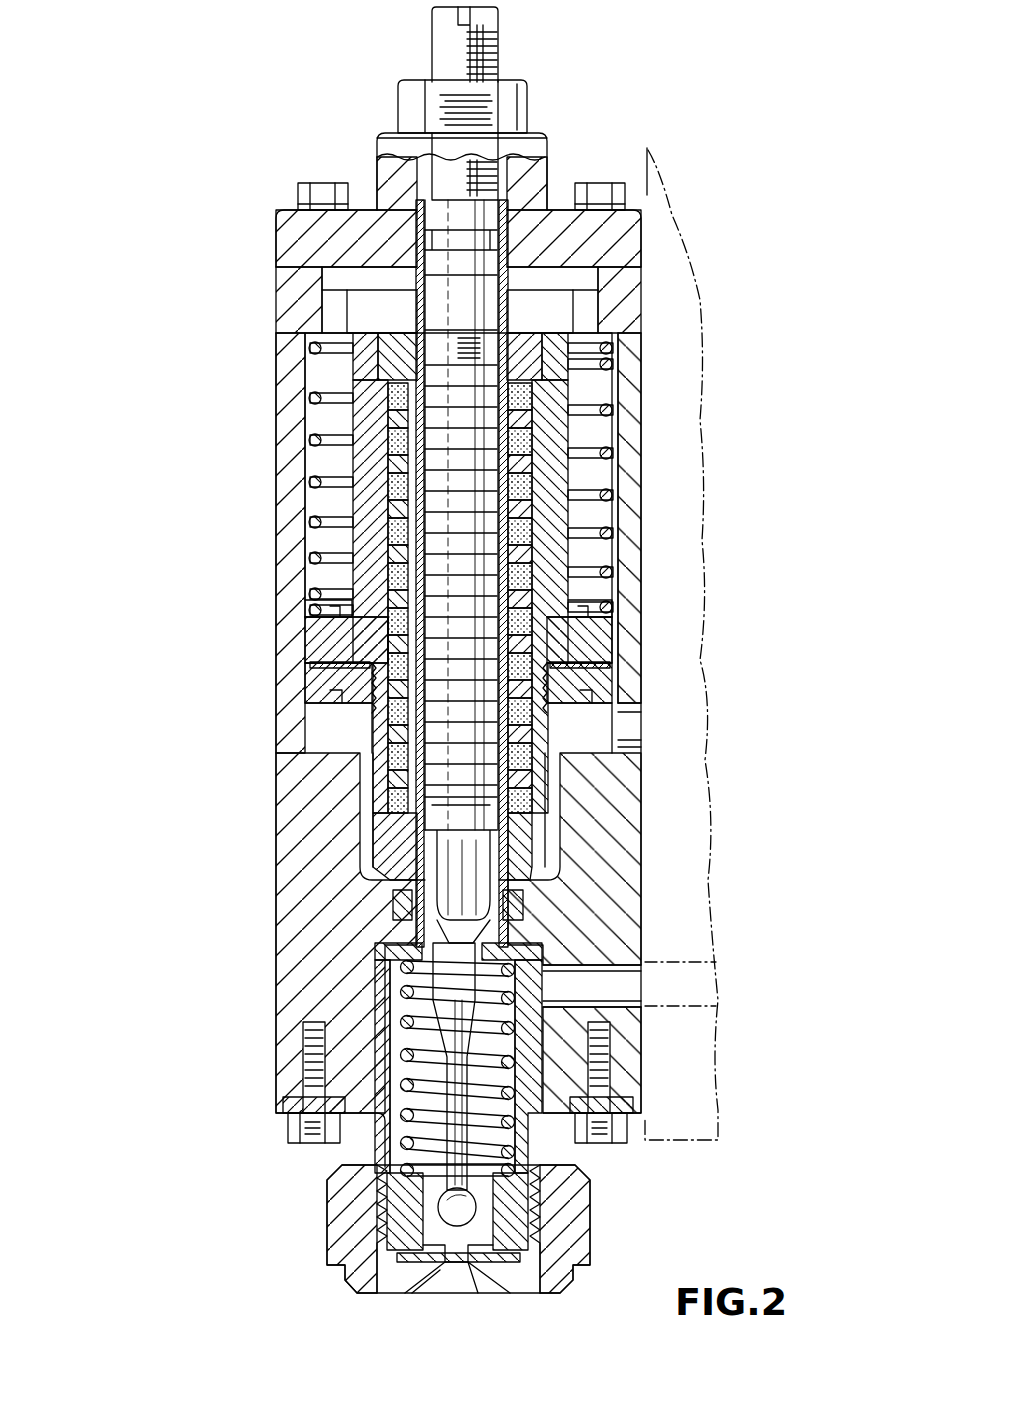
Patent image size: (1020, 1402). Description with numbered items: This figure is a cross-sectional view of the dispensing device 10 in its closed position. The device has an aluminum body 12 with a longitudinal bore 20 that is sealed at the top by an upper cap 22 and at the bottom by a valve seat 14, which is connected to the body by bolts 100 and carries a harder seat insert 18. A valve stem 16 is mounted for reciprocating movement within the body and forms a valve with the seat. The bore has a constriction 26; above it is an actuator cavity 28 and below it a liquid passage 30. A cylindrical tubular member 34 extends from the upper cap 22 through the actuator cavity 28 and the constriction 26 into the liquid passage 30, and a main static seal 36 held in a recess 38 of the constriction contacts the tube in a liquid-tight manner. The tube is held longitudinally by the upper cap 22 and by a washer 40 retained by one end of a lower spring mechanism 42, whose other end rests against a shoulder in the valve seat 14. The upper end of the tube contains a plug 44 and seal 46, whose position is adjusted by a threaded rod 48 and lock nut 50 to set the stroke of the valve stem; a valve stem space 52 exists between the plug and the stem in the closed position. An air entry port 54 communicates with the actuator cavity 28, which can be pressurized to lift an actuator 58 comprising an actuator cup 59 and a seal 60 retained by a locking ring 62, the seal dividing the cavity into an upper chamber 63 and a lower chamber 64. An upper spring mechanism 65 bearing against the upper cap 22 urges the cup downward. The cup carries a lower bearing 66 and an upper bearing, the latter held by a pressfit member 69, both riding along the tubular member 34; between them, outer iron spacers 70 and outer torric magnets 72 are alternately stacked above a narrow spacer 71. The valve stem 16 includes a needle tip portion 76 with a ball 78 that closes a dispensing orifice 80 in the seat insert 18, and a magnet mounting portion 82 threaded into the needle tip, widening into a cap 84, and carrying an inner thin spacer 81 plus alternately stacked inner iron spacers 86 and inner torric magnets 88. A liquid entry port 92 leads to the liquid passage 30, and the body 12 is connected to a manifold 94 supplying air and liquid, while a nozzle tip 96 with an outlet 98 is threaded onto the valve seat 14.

The dispensing device 10 is at (190, 275).
The body 12 is at (282, 822).
The valve seat 14 is at (378, 1150).
The valve stem 16 is at (425, 937).
The seat insert 18 is at (417, 1233).
The longitudinal bore 20 is at (330, 722).
The upper cap 22 is at (285, 272).
The constriction 26 is at (545, 932).
The actuator cavity 28 is at (600, 442).
The liquid passage 30 is at (555, 950).
The cylindrical tubular member 34 is at (598, 290).
The main static seal 36 is at (393, 905).
The recess 38 is at (540, 900).
The washer 40 is at (395, 957).
The lower spring mechanism 42 is at (395, 985).
The plug 44 is at (547, 178).
The seal 46 is at (417, 232).
The threaded rod 48 is at (498, 20).
The lock nut 50 is at (522, 86).
The valve stem space 52 is at (458, 312).
The air entry port 54 is at (705, 680).
The actuator 58 is at (335, 495).
The actuator cup 59 is at (330, 462).
The seal 60 is at (600, 652).
The locking ring 62 is at (330, 688).
The upper chamber 63 is at (605, 390).
The lower chamber 64 is at (598, 748).
The upper spring mechanism 65 is at (300, 388).
The lower bearing 66 is at (575, 852).
The pressfit member 69 is at (598, 306).
The outer iron spacers 70 is at (395, 605).
The narrow spacer 71 is at (560, 815).
The outer torric magnets 72 is at (535, 540).
The needle tip portion 76 is at (395, 885).
The ball 78 is at (470, 1200).
The dispensing orifice 80 is at (427, 1260).
The inner thin spacer 81 is at (400, 795).
The magnet mounting portion 82 is at (560, 800).
The cap 84 is at (440, 340).
The inner iron spacers 86 is at (420, 625).
The inner torric magnets 88 is at (435, 652).
The liquid entry port 92 is at (693, 1002).
The manifold 94 is at (697, 1132).
The nozzle tip 96 is at (348, 1294).
The outlet 98 is at (455, 1267).
The bolts 100 is at (300, 1128).